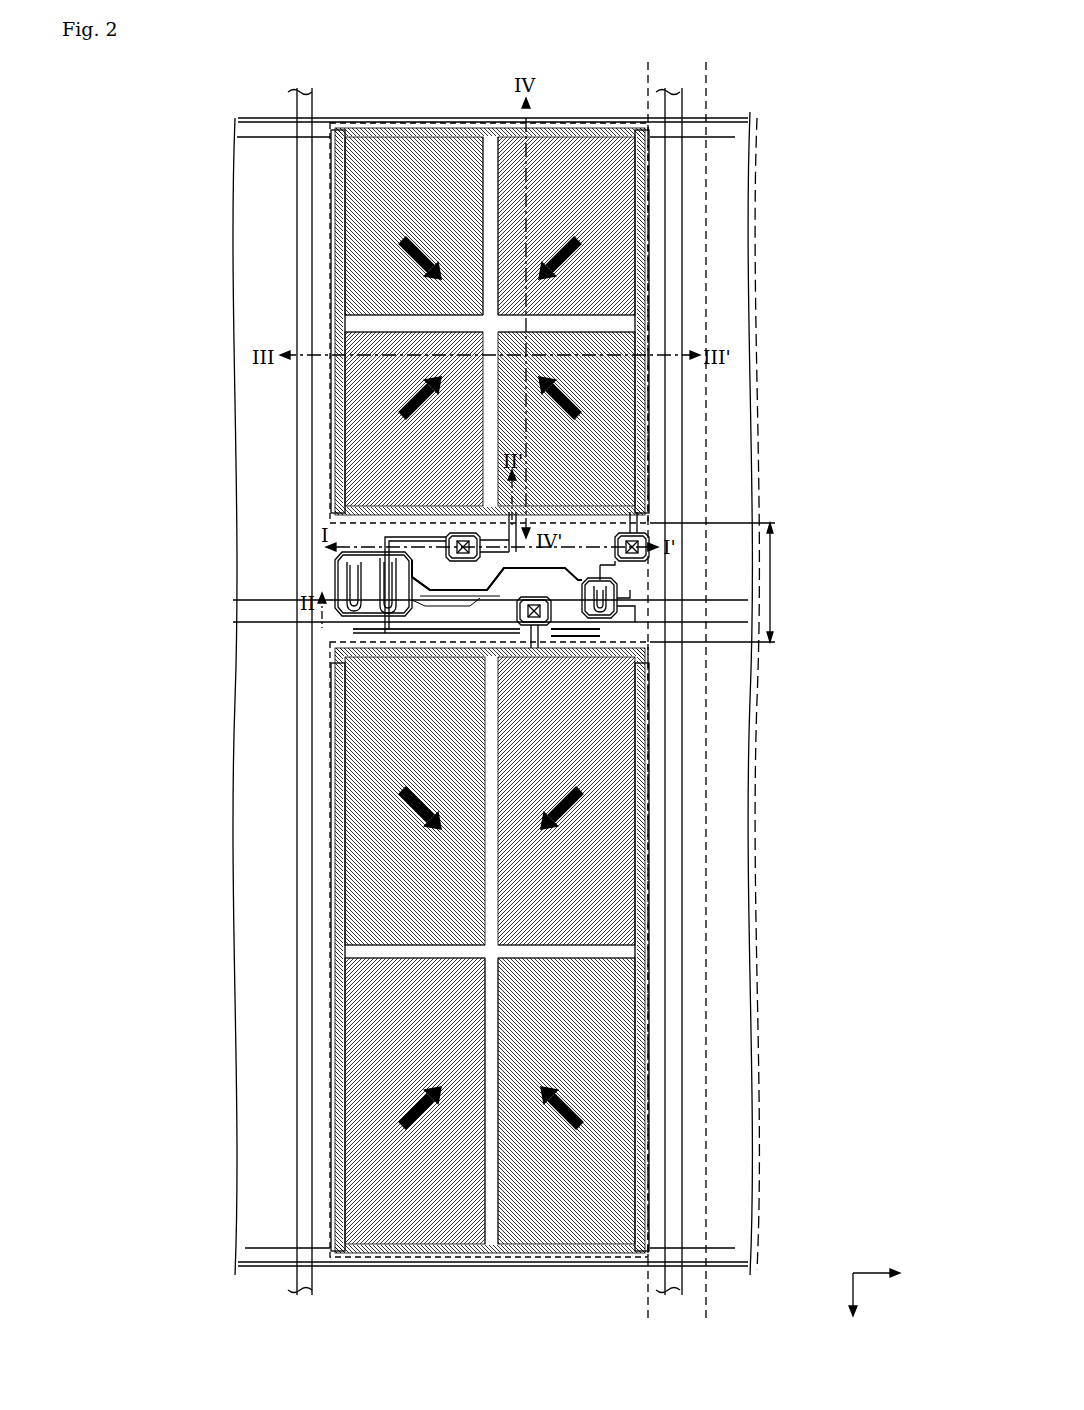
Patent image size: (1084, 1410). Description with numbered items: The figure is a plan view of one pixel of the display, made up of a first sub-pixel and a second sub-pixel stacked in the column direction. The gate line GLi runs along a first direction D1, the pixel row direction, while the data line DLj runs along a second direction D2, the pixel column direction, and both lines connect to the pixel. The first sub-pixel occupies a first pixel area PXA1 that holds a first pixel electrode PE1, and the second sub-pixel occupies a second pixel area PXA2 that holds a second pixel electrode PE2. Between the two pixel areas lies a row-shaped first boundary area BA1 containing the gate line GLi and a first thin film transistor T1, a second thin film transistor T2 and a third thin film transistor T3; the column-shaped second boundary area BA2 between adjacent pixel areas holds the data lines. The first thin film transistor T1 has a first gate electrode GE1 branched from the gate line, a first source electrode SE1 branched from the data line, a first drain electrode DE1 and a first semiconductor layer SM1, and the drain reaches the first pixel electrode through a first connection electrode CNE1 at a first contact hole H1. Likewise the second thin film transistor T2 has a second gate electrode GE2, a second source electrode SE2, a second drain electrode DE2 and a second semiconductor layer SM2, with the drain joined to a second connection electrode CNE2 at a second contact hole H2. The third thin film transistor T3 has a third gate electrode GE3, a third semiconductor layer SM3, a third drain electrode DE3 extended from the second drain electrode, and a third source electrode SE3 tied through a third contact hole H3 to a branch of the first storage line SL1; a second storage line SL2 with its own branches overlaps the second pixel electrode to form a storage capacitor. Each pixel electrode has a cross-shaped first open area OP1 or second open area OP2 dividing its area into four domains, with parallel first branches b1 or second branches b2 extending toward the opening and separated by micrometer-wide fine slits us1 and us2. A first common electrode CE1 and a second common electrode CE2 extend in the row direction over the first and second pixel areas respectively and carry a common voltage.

The data line DLj is at (304, 88).
The first storage line SL1 is at (736, 132).
The second storage line SL2 is at (745, 1263).
The gate line GLi is at (232, 612).
The first boundary area BA1 is at (732, 582).
The second boundary area BA2 is at (706, 72).
The first pixel area PXA1 is at (650, 196).
The second pixel area PXA2 is at (752, 771).
The first common electrode CE1 is at (740, 287).
The second common electrode CE2 is at (740, 949).
The first pixel electrode PE1 is at (650, 303).
The second pixel electrode PE2 is at (650, 973).
The first branches b1 is at (642, 394).
The second branches b2 is at (642, 1089).
The first fine slits us1 is at (642, 422).
The fine slits us2 is at (642, 1064).
The first open area OP1 is at (491, 162).
The second open area OP2 is at (491, 1246).
The first contact hole H1 is at (456, 543).
The second contact hole H2 is at (532, 627).
The third contact hole H3 is at (642, 533).
The first connection electrode CNE1 is at (452, 533).
The second connection electrode CNE2 is at (512, 640).
The first thin film transistor T1 is at (339, 650).
The second thin film transistor T2 is at (254, 563).
The third thin film transistor T3 is at (727, 667).
The first semiconductor layer SM1 is at (445, 624).
The first gate electrode GE1 is at (470, 627).
The first drain electrode DE1 is at (397, 624).
The first source electrode SE1 is at (382, 622).
The second semiconductor layer SM2 is at (346, 562).
The second gate electrode GE2 is at (352, 580).
The second drain electrode DE2 is at (366, 592).
The second source electrode SE2 is at (388, 604).
The third semiconductor layer SM3 is at (618, 584).
The third gate electrode GE3 is at (618, 592).
The third drain electrode DE3 is at (622, 607).
The third source electrode SE3 is at (620, 600).
The first direction D1 is at (892, 1273).
The second direction D2 is at (853, 1310).